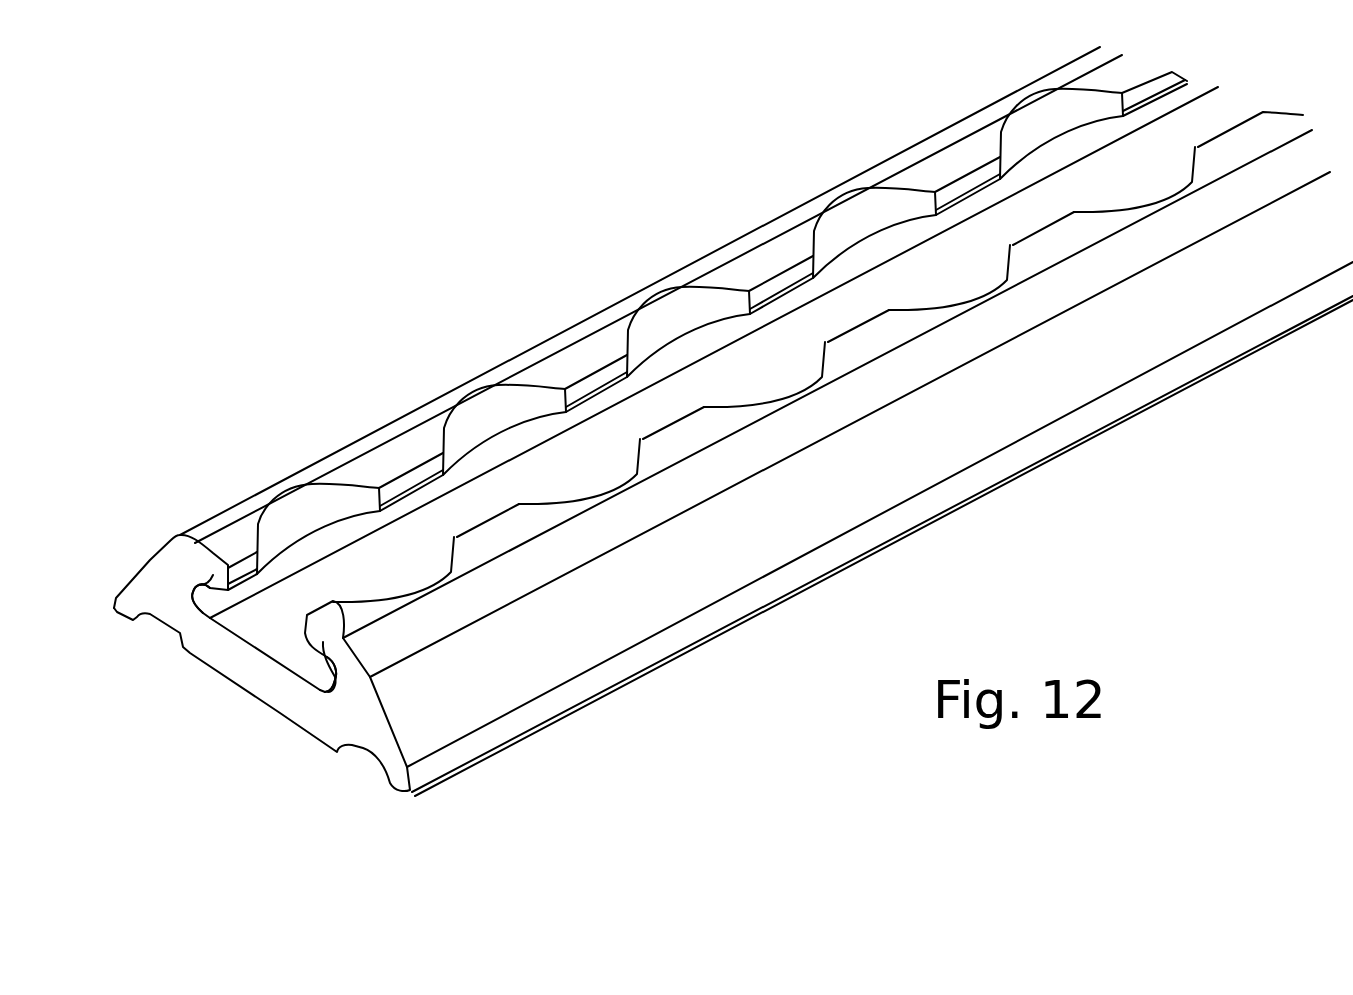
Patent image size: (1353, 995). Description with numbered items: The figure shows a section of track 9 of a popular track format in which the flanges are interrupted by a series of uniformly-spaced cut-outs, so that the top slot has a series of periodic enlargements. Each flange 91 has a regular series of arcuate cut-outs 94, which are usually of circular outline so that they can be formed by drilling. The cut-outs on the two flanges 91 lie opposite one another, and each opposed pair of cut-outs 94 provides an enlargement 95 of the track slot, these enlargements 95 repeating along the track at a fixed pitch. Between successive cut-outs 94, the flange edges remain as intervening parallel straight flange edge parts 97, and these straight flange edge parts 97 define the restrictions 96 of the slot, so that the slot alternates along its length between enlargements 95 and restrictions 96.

The profile rail 9 is at (706, 433).
The flange 91 is at (195, 590).
The arcuate cut-outs 94 is at (640, 448).
The enlargements 95 is at (537, 463).
The restrictions 96 is at (455, 505).
The straight flange edge parts 97 is at (678, 428).